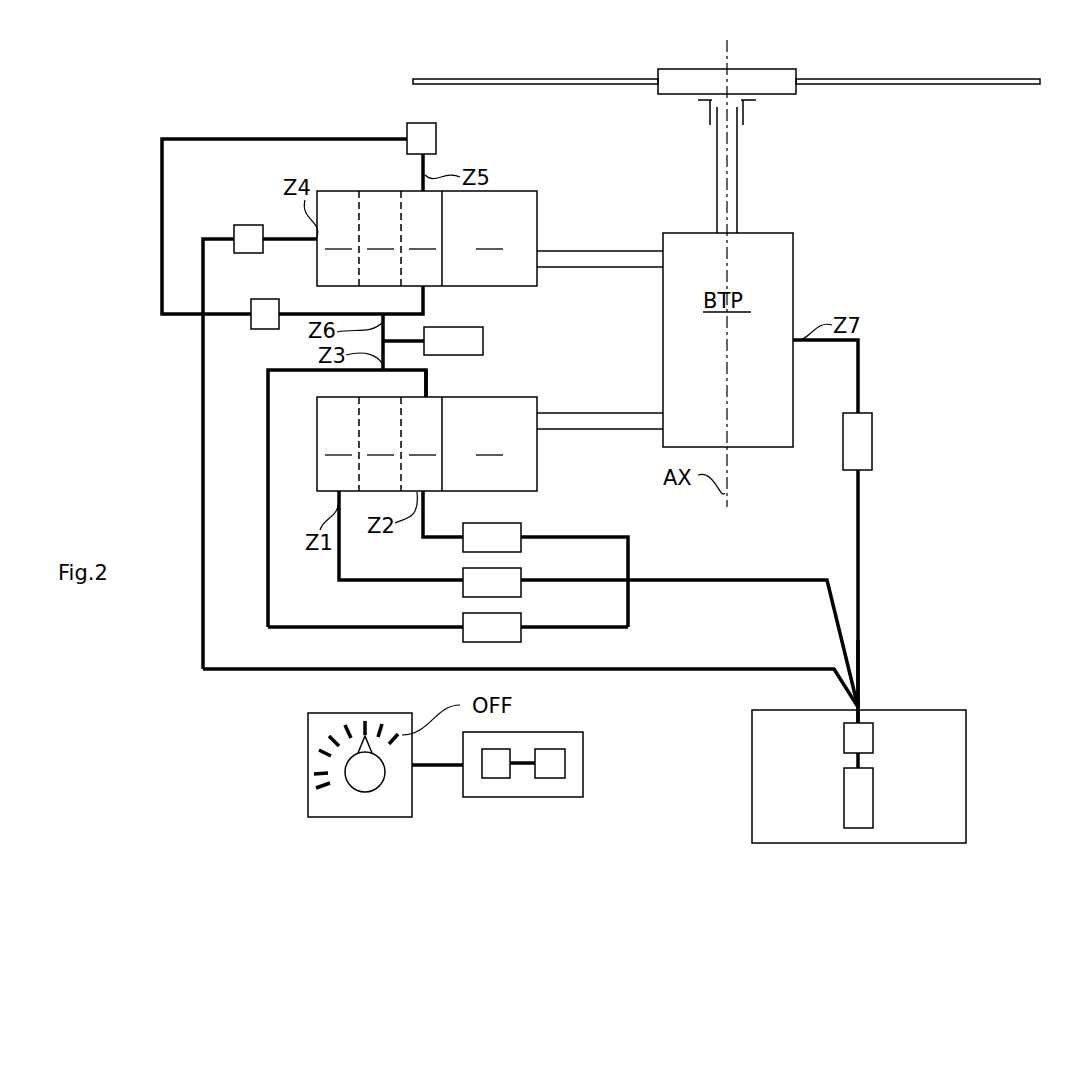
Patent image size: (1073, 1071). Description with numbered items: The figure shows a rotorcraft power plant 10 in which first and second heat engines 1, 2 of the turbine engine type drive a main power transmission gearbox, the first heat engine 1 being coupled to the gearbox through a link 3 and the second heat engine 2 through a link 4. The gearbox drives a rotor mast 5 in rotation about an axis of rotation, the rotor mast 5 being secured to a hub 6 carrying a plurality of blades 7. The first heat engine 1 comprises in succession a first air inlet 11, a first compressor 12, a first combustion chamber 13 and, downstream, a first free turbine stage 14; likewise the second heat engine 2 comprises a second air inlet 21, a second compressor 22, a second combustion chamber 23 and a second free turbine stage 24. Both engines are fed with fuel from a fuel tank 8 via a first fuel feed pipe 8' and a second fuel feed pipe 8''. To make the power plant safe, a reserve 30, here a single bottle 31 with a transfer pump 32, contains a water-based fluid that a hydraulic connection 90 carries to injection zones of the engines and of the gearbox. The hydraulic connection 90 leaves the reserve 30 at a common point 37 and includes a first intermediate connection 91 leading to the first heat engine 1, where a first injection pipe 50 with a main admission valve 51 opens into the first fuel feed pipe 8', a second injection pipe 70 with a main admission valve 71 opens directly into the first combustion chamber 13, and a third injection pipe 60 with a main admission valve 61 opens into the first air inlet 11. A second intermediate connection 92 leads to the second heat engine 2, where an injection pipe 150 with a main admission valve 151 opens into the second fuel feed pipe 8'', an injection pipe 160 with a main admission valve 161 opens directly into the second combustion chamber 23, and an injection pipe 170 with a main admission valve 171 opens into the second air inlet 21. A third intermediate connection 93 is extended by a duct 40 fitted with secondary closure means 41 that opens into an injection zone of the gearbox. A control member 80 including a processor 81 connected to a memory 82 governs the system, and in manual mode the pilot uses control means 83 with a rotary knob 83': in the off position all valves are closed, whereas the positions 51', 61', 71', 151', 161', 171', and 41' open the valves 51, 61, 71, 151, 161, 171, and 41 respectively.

The first heat engine 1 is at (520, 397).
The second heat engine 2 is at (522, 190).
The first mechanical shaft link 3 is at (622, 412).
The second mechanical shaft link 4 is at (590, 270).
The rotor mast 5 is at (735, 182).
The hub 6 is at (780, 94).
The blades 7 is at (482, 85).
The fuel tank 8 is at (477, 330).
The first fuel feed pipe 8' is at (453, 380).
The second fuel feed pipe 8'' is at (376, 329).
The power plant 10 is at (604, 200).
The first air inlet 11 is at (338, 444).
The first compressor 12 is at (380, 444).
The first combustion chamber 13 is at (422, 444).
The first free turbine stage 14 is at (489, 444).
The second air inlet 21 is at (338, 238).
The second compressor 22 is at (380, 238).
The second combustion chamber 23 is at (422, 238).
The second free turbine stage 24 is at (489, 238).
The reserve 30 is at (967, 733).
The bottle 31 is at (873, 780).
The transfer pump 32 is at (845, 733).
The connection node 37 is at (865, 728).
The duct 40 is at (862, 493).
The secondary closure means 41 is at (887, 441).
The first injection pipe 50 is at (565, 627).
The main admission valve 51 is at (481, 640).
The third injection pipe 60 is at (603, 578).
The main admission valve 61 is at (460, 572).
The second injection pipe 70 is at (545, 530).
The main admission valve 71 is at (482, 525).
The control member 80 is at (567, 732).
The processor 81 is at (492, 778).
The memory 82 is at (567, 753).
The control means 83 is at (360, 780).
The rotary knob 83' is at (401, 776).
The electrical network 90 is at (889, 583).
The first intermediate connection 91 is at (777, 578).
The second intermediate connection 92 is at (800, 669).
The third intermediate connection 93 is at (860, 648).
The injection pipe 150 is at (305, 312).
The main admission valve 151 is at (204, 345).
The injection pipe 160 is at (205, 139).
The main admission valve 161 is at (391, 126).
The injection pipe 170 is at (203, 232).
The main admission valve 171 is at (236, 212).
The knob position 41' is at (415, 708).
The knob position 51' is at (286, 800).
The knob position 61' is at (281, 778).
The knob position 71' is at (285, 750).
The knob position 151' is at (285, 729).
The knob position 161' is at (303, 710).
The knob position 171' is at (351, 688).